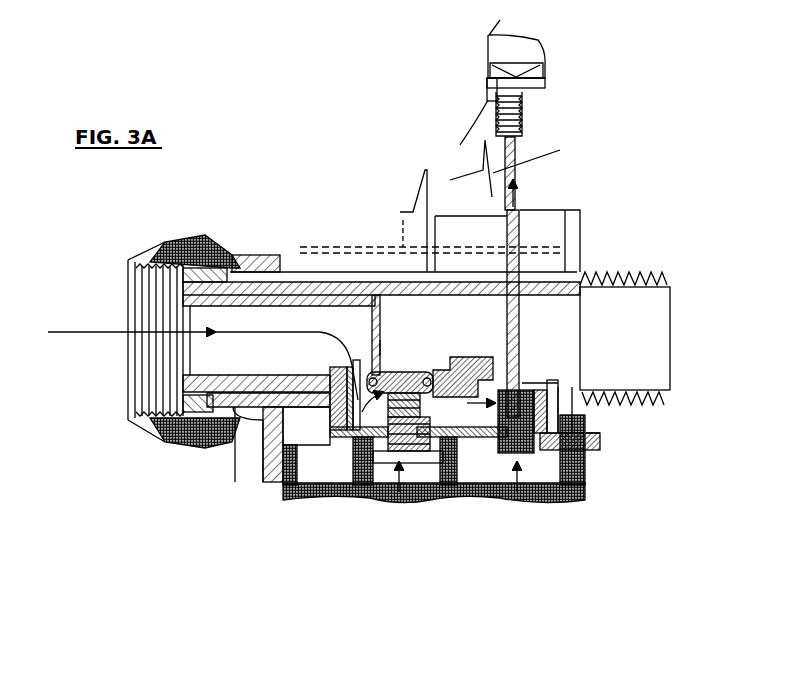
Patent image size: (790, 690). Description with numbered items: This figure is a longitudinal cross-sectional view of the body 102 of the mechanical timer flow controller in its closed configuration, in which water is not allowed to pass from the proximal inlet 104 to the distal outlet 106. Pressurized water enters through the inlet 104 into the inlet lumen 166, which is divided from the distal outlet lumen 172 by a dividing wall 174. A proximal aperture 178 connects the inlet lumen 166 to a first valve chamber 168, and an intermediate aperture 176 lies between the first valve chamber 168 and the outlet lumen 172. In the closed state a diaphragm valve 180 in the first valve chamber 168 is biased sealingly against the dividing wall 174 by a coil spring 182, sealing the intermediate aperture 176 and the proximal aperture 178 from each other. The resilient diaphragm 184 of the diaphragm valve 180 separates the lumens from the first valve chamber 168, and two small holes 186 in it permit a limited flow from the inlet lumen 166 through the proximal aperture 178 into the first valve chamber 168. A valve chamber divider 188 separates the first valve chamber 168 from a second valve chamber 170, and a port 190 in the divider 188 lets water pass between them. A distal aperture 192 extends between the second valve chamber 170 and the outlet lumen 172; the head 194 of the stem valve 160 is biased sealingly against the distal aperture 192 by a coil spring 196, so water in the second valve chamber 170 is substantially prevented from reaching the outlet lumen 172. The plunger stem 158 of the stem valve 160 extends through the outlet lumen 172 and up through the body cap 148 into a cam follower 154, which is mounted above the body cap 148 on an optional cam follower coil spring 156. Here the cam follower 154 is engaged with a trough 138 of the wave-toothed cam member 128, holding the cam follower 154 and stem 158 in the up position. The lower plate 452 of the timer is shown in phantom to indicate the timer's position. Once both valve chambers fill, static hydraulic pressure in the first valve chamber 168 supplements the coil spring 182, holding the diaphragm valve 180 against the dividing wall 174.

The body 102 is at (327, 186).
The inlet 104 is at (127, 305).
The outlet 106 is at (682, 327).
The cam member 128 is at (505, 38).
The trough 138 is at (545, 68).
The body cap 148 is at (80, 334).
The cam follower 154 is at (525, 88).
The cam follower coil spring 156 is at (520, 112).
The plunger stem 158 is at (515, 152).
The stem valve 160 is at (522, 480).
The inlet lumen 166 is at (192, 362).
The first valve chamber 168 is at (325, 440).
The second valve chamber 170 is at (465, 490).
The outlet lumen 172 is at (643, 372).
The dividing wall 174 is at (399, 282).
The intermediate aperture 176 is at (406, 355).
The proximal aperture 178 is at (355, 392).
The diaphragm valve 180 is at (399, 492).
The coil spring 182 is at (383, 440).
The resilient diaphragm 184 is at (430, 452).
The holes 186 is at (348, 398).
The valve chamber divider 188 is at (445, 440).
The port 190 is at (437, 490).
The distal aperture 192 is at (520, 376).
The head 194 is at (555, 440).
The coil spring 196 is at (522, 470).
The lower plate 452 is at (245, 262).